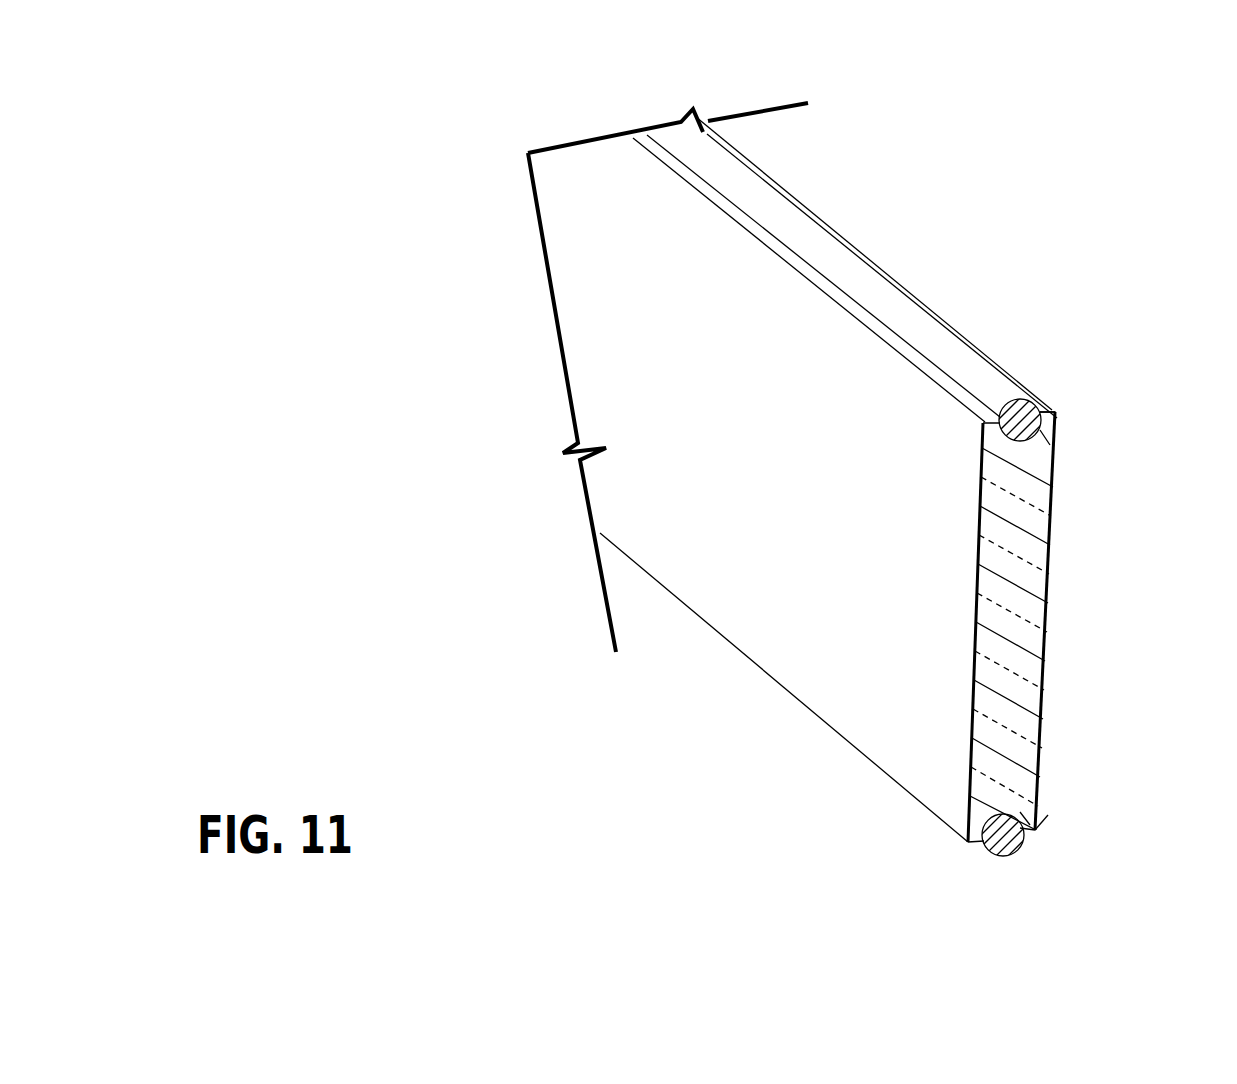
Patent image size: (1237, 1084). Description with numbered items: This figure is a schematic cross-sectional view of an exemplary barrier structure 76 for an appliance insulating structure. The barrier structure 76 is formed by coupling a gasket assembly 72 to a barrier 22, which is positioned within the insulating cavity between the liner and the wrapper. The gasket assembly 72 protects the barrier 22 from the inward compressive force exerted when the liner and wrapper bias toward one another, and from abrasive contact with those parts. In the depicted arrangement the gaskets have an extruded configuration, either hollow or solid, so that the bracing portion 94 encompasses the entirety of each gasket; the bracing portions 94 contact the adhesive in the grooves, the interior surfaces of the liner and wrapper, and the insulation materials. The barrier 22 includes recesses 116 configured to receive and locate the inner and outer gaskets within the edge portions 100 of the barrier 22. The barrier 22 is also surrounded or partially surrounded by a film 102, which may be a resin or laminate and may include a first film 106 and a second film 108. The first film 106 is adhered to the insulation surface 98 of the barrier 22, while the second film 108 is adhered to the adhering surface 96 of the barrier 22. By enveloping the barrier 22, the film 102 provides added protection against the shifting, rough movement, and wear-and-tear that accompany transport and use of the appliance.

The barrier 22 is at (635, 277).
The barrier structure 76 is at (862, 146).
The edge portions 100 is at (876, 330).
The bracing portion 94 is at (937, 348).
The gasket assembly 72 is at (1055, 400).
The recesses 116 is at (1042, 445).
The second film 108 is at (1052, 530).
The film 102 is at (977, 528).
The first film 106 is at (977, 615).
The insulation surface 98 is at (787, 511).
The adhering surface 96 is at (1040, 743).